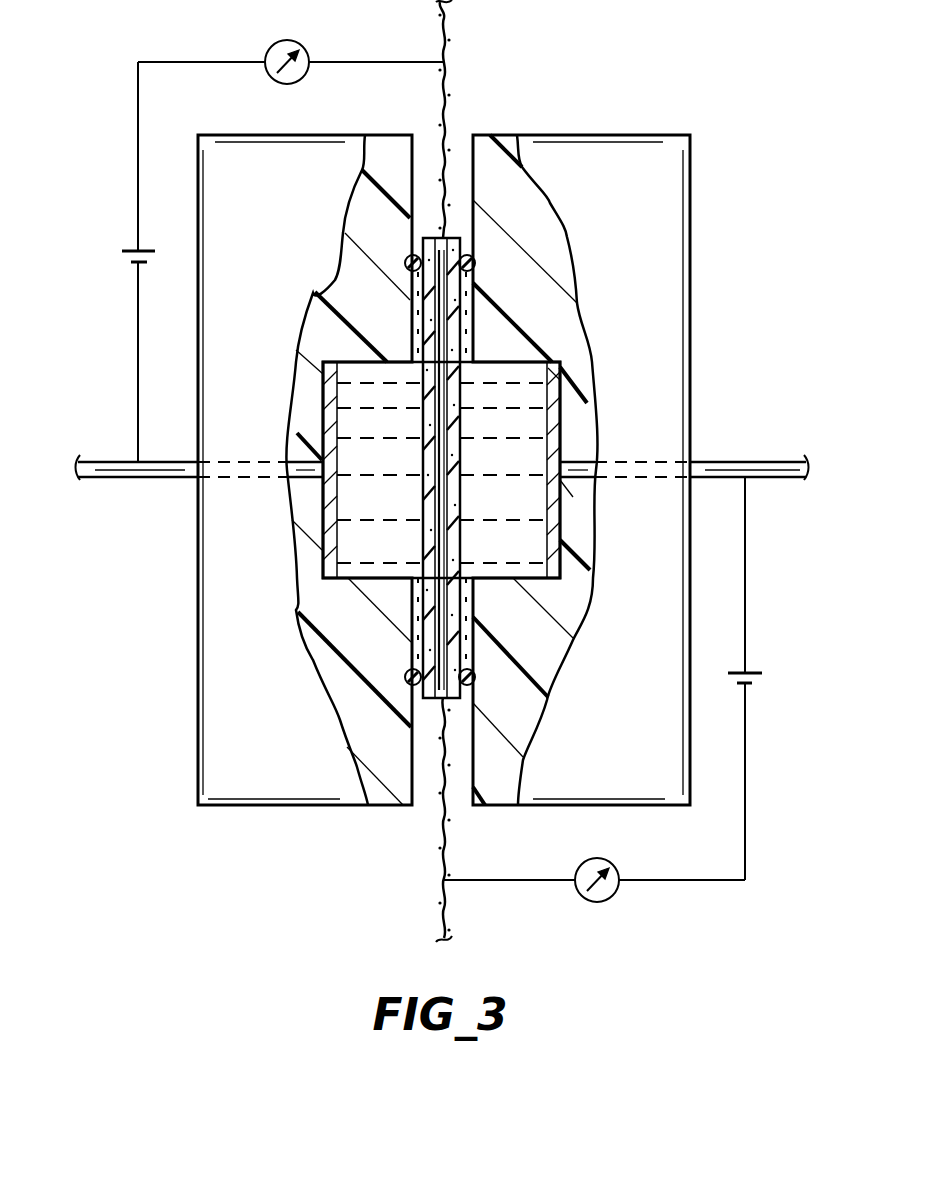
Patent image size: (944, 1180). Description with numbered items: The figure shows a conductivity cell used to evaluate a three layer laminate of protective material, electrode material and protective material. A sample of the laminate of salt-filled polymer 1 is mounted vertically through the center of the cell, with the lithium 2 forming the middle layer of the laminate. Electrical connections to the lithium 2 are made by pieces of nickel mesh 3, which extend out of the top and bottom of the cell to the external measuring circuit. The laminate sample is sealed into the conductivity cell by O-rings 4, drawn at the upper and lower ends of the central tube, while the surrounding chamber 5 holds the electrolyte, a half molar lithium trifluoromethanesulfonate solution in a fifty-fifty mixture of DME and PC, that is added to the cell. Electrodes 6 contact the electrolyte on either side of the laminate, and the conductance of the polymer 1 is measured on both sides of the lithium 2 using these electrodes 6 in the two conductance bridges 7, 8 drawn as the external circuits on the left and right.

The salt-filled polymer laminate 1 is at (430, 542).
The lithium 2 is at (458, 285).
The nickel mesh 3 is at (447, 100).
The O-rings 4 is at (405, 258).
The housing 5 is at (548, 412).
The electrodes 6 is at (323, 405).
The conductance bridge 7 is at (137, 250).
The conductance bridge 8 is at (755, 684).